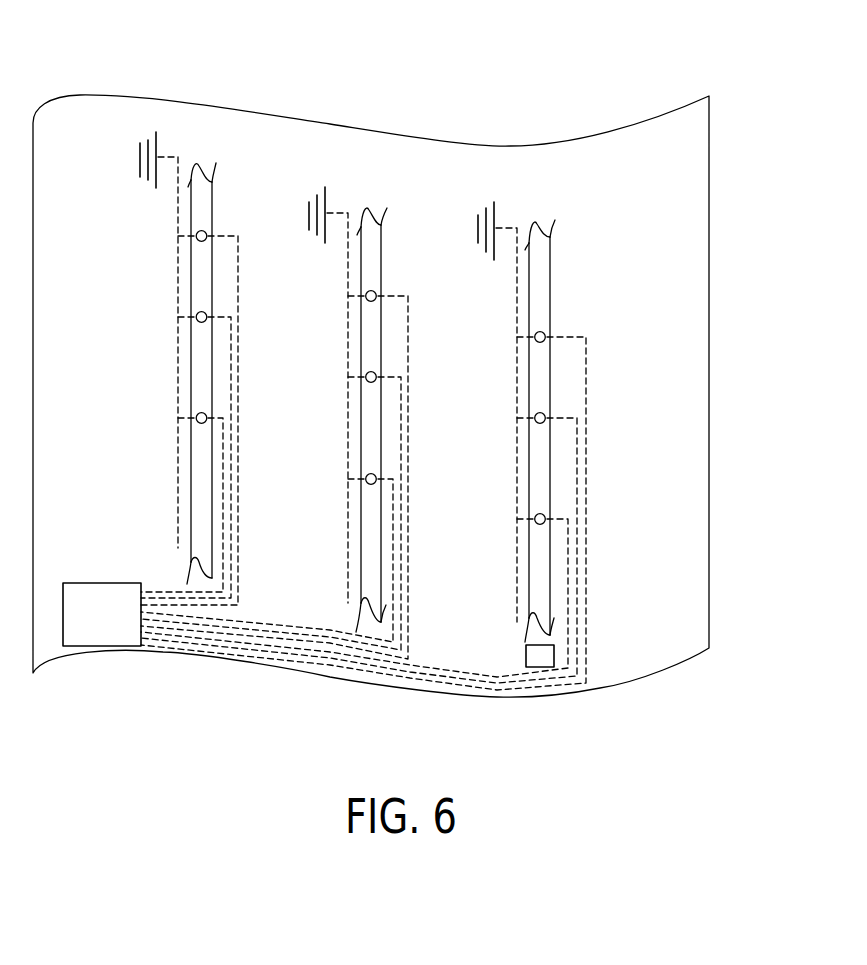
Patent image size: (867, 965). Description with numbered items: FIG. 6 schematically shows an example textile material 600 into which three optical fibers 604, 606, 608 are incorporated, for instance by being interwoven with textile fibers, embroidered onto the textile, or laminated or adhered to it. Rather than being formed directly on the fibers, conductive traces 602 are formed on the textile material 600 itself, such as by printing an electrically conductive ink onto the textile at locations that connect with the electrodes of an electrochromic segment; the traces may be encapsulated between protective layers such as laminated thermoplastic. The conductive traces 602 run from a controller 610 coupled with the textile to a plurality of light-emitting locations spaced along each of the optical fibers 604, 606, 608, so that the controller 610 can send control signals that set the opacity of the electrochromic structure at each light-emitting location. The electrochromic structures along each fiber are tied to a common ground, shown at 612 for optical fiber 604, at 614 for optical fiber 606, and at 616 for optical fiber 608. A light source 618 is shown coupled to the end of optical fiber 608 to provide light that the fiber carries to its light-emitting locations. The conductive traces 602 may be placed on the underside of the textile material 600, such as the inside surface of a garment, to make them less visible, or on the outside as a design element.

The textile material 600 is at (648, 64).
The conductive traces 602 is at (223, 553).
The optical fiber 604 is at (212, 207).
The optical fiber 606 is at (381, 262).
The optical fiber 608 is at (550, 293).
The controller 610 is at (119, 627).
The common ground 612 is at (140, 160).
The common ground 614 is at (309, 216).
The common ground 616 is at (478, 229).
The light source 618 is at (526, 657).